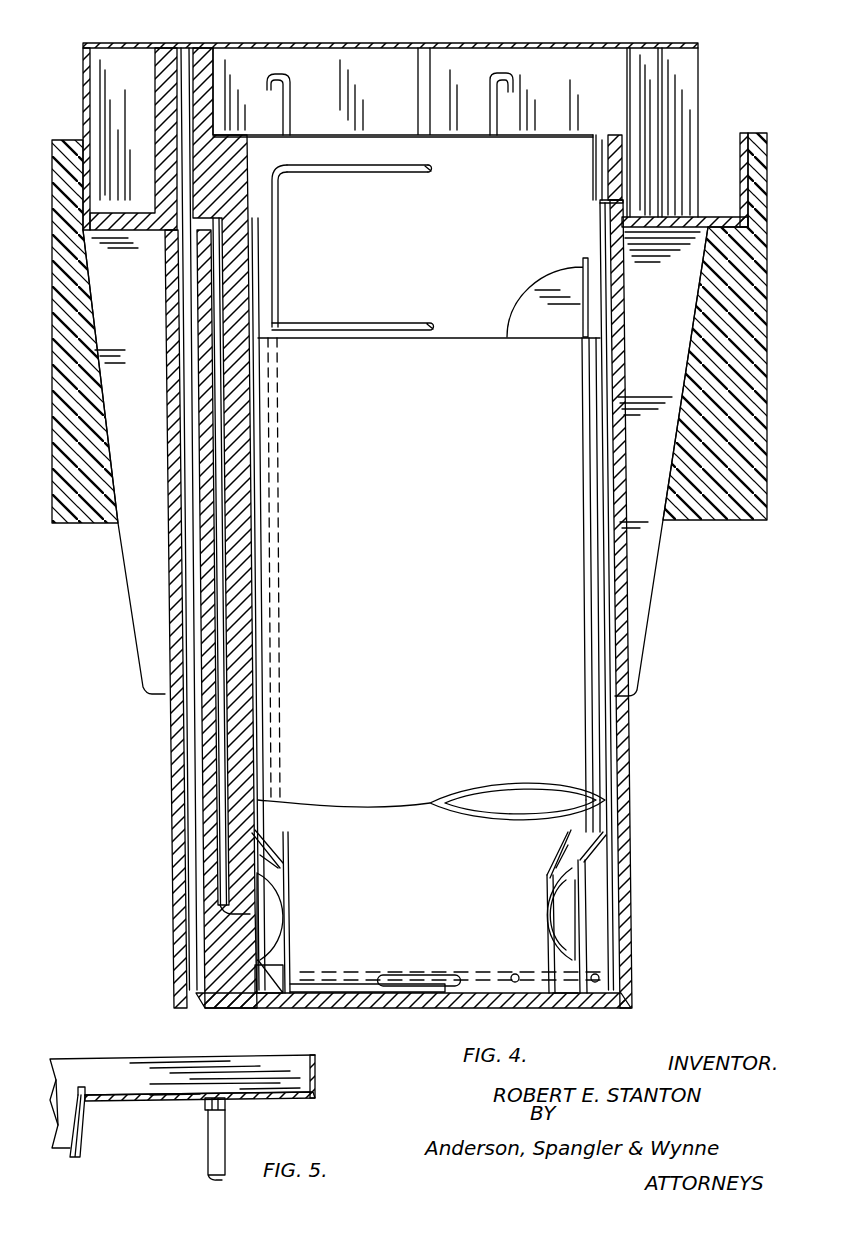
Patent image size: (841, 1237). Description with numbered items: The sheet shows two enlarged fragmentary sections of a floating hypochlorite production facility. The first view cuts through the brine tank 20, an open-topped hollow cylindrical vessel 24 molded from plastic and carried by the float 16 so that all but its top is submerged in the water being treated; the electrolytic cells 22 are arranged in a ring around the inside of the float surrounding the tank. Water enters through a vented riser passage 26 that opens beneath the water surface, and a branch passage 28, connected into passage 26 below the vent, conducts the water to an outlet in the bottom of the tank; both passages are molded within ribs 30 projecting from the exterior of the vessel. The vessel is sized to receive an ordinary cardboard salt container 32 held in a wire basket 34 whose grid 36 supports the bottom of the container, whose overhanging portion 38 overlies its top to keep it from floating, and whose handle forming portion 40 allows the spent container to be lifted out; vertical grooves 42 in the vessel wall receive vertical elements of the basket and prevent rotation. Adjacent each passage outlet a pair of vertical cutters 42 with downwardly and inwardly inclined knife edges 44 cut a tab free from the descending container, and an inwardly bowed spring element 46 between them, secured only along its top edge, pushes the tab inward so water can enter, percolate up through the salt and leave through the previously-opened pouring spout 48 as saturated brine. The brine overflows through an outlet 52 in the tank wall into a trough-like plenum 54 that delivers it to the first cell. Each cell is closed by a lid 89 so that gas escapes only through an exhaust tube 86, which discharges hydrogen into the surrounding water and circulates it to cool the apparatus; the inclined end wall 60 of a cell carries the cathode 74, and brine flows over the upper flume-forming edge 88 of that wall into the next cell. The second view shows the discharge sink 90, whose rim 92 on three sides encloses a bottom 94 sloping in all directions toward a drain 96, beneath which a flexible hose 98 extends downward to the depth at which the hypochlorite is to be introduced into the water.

In FIG. 4, the float 16 is at (68, 480).
In FIG. 4, the brine tank 20 is at (627, 718).
In FIG. 4, the electrolytic cells 22 is at (143, 598).
In FIG. 4, the hollow cylindrical vessel 24 is at (625, 640).
In FIG. 4, the vented riser passage 26 is at (193, 796).
In FIG. 4, the branch passage 28 is at (215, 462).
In FIG. 4, the ribs 30 is at (171, 722).
In FIG. 4, the cardboard salt container 32 is at (585, 757).
In FIG. 4, the wire basket 34 is at (340, 173).
In FIG. 4, the grid 36 is at (442, 974).
In FIG. 4, the overhanging portion 38 is at (432, 321).
In FIG. 4, the handle forming portion 40 is at (415, 173).
In FIG. 4, the cutters 42 is at (278, 150).
In FIG. 4, the knife edges 44 is at (275, 858).
In FIG. 4, the bowed elements 46 is at (290, 916).
In FIG. 4, the pouring spout 48 is at (548, 282).
In FIG. 4, the outlet 52 is at (598, 190).
In FIG. 4, the plenum 54 is at (682, 215).
In FIG. 4, the exhaust tube 86 is at (292, 120).
In FIG. 4, the lids 89 is at (152, 38).
In FIG. 5, the end wall 60 is at (83, 1133).
In FIG. 5, the cathode 74 is at (72, 1120).
In FIG. 5, the flume-forming edge 88 is at (87, 1088).
In FIG. 5, the plate 90 is at (276, 1092).
In FIG. 5, the rim 92 is at (317, 1068).
In FIG. 5, the bottom 94 is at (160, 1101).
In FIG. 5, the drain 96 is at (206, 1105).
In FIG. 5, the flexible hose 98 is at (210, 1150).